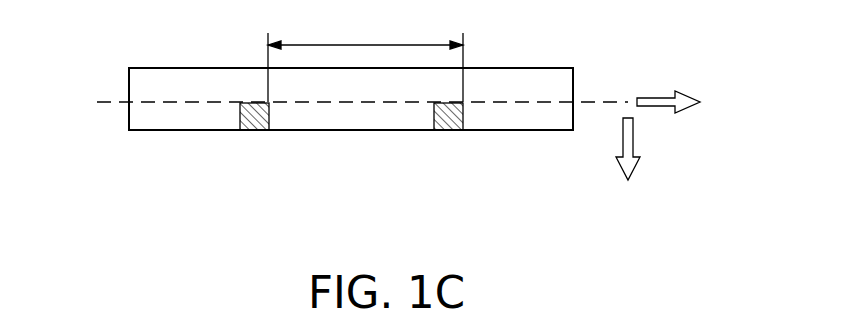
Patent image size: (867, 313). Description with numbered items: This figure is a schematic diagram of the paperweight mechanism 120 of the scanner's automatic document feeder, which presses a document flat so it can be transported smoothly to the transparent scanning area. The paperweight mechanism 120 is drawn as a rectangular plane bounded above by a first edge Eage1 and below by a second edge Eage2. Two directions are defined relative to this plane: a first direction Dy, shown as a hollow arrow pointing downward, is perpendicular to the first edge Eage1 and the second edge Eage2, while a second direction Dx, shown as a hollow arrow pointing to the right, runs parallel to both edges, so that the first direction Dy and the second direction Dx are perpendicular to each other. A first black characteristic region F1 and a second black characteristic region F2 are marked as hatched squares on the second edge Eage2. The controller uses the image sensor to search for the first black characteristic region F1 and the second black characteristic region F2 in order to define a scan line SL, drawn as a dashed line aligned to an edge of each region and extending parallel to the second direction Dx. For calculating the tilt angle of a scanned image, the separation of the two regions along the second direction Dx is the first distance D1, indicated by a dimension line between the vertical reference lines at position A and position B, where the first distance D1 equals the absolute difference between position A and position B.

The paperweight mechanism 120 is at (150, 78).
The scan line SL is at (102, 110).
The first black characteristic region F1 is at (252, 130).
The second black characteristic region F2 is at (447, 130).
The position A is at (268, 52).
The position B is at (463, 52).
The first distance D1 is at (365, 31).
The first edge Eage1 is at (549, 58).
The second edge Eage2 is at (555, 132).
The second direction Dx is at (684, 100).
The first direction Dy is at (629, 168).